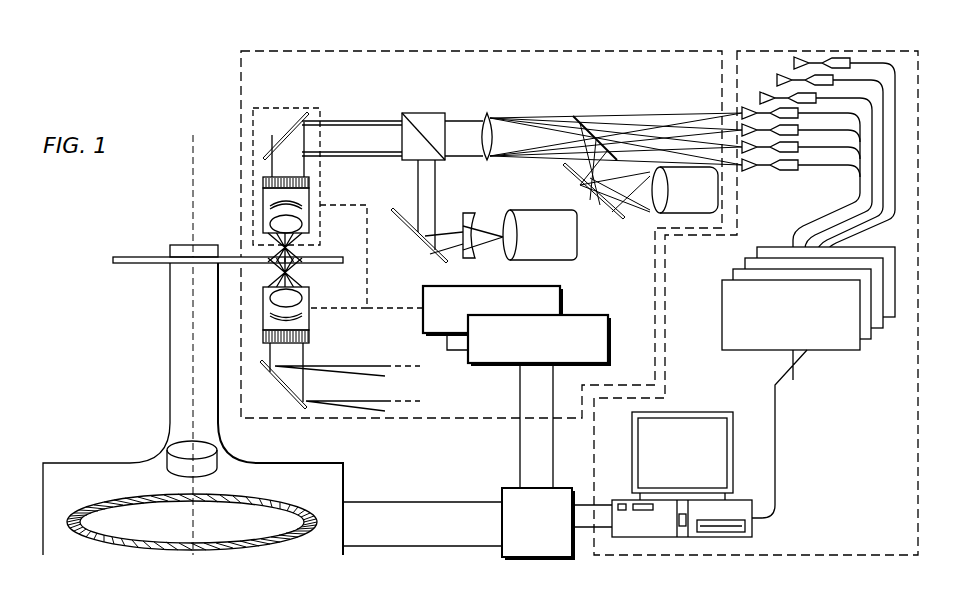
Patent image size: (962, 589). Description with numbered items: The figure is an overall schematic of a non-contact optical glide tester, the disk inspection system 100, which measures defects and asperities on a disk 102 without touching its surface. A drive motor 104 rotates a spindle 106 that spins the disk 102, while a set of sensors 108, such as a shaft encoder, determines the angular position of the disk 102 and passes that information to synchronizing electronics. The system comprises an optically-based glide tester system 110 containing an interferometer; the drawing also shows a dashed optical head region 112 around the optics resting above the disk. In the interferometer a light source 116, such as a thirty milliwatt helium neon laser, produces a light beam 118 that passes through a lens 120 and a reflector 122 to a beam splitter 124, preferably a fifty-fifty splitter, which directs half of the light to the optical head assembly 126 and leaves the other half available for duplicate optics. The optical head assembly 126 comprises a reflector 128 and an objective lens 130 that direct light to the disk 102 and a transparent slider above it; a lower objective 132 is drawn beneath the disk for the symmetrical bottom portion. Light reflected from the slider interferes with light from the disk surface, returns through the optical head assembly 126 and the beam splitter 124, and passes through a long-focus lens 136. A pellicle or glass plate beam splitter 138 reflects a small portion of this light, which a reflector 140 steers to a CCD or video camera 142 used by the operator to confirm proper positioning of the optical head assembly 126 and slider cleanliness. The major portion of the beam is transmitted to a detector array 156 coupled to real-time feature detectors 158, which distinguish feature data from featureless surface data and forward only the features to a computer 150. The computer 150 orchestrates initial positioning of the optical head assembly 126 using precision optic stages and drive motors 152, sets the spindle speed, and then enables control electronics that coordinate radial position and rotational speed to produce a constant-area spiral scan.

The disk inspection system 100 is at (187, 60).
The disk 102 is at (133, 257).
The drive motor 104 is at (170, 470).
The spindle 106 is at (170, 320).
The set of sensors 108 is at (262, 500).
The optically-based glide tester system 110 is at (766, 48).
The optical head 112 is at (238, 108).
The light source 116 is at (553, 260).
The light beam 118 is at (485, 233).
The lens 120 is at (470, 258).
The reflector 122 is at (420, 240).
The beam splitter 124 is at (425, 113).
The optical head assembly 126 is at (320, 110).
The reflector 128 is at (285, 130).
The objective lens 130 is at (311, 200).
The lower objective lens assembly 132 is at (322, 265).
The long-focus lens 136 is at (487, 113).
The pellicle or glass plate beam splitter 138 is at (578, 118).
The reflector 140 is at (600, 208).
The CCD or video camera 142 is at (690, 215).
The computer 150 is at (752, 530).
The precision optic stages and drive motors 152 is at (450, 350).
The detector array 156 is at (778, 172).
The real-time feature detectors 158 is at (884, 336).